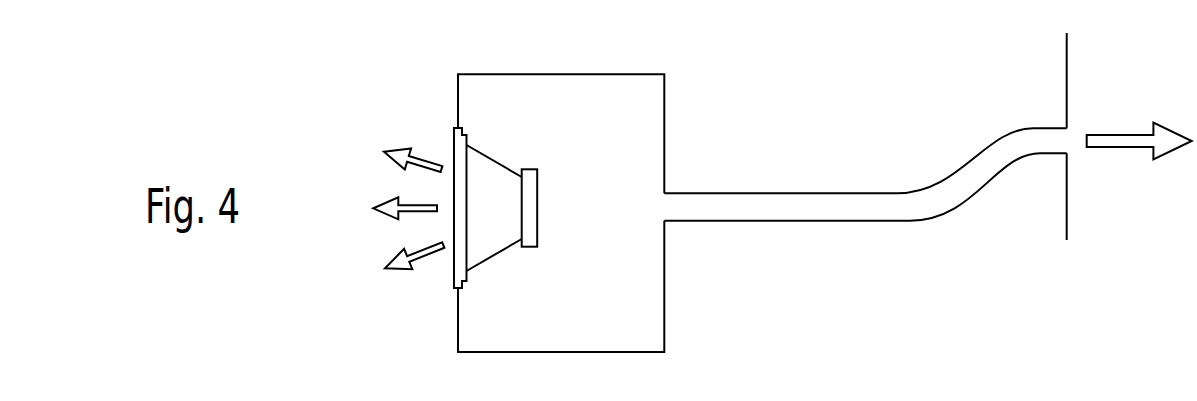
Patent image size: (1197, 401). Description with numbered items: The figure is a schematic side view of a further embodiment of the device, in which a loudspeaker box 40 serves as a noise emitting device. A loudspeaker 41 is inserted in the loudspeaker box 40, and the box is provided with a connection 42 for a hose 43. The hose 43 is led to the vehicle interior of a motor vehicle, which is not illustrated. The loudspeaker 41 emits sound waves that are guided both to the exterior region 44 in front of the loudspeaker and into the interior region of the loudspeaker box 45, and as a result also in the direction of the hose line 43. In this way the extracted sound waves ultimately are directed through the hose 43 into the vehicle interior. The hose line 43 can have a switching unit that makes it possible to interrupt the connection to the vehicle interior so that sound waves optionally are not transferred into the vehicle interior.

The loudspeaker box 40 is at (664, 114).
The loudspeaker 41 is at (467, 163).
The connection 42 is at (664, 193).
The hose 43 is at (858, 202).
The exterior region 44 is at (428, 328).
The interior region of the loudspeaker box 45 is at (570, 328).